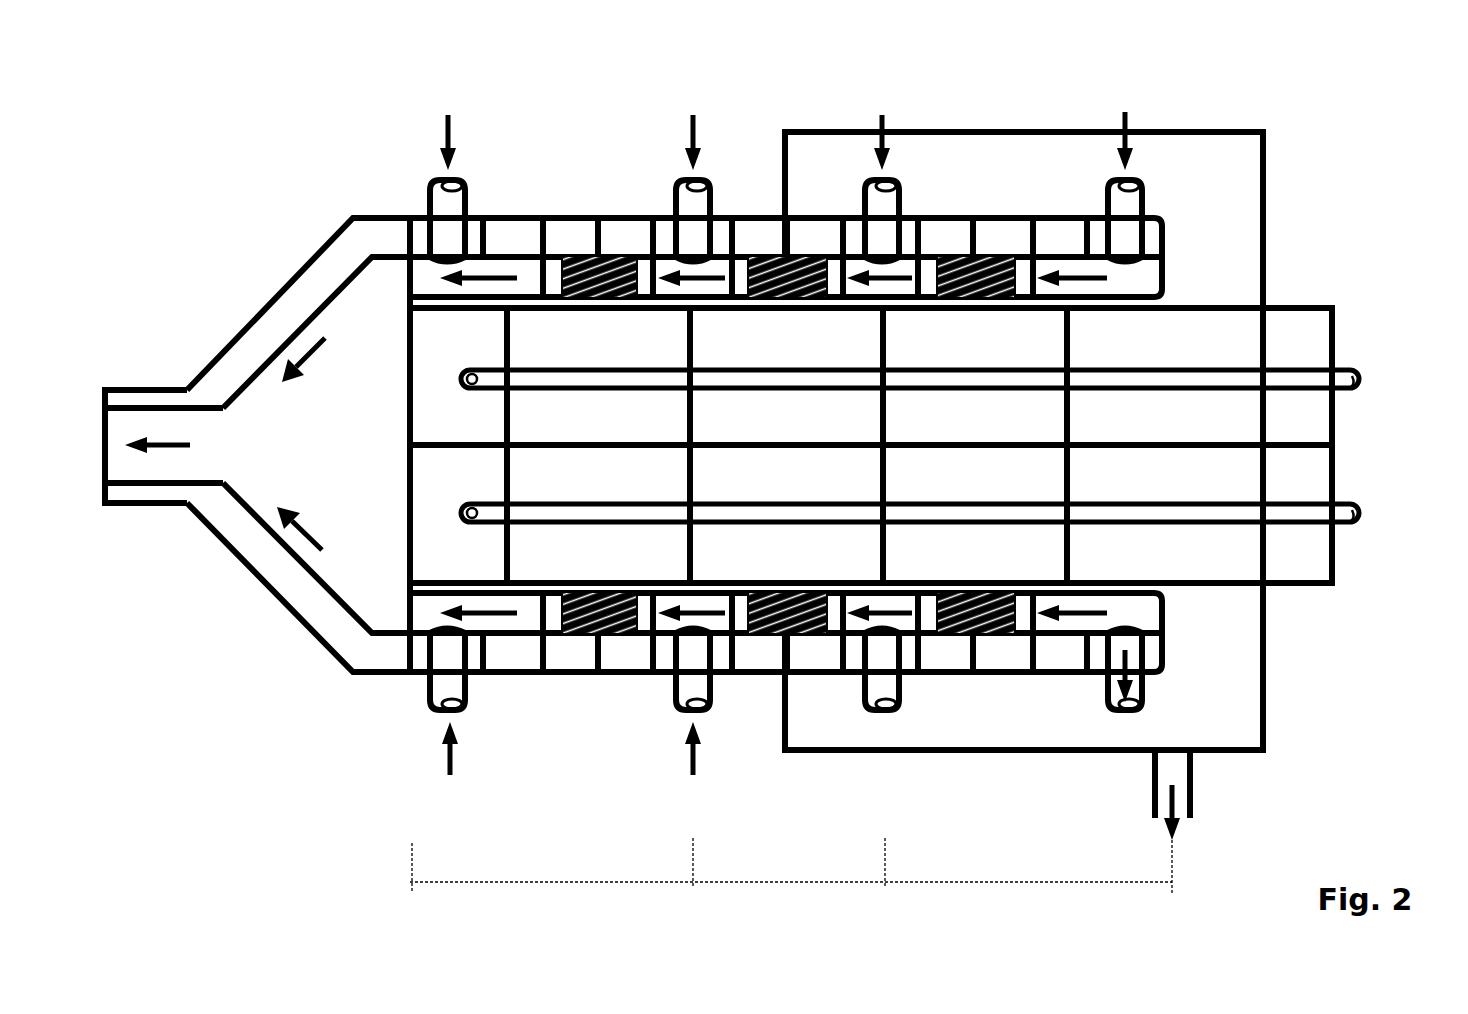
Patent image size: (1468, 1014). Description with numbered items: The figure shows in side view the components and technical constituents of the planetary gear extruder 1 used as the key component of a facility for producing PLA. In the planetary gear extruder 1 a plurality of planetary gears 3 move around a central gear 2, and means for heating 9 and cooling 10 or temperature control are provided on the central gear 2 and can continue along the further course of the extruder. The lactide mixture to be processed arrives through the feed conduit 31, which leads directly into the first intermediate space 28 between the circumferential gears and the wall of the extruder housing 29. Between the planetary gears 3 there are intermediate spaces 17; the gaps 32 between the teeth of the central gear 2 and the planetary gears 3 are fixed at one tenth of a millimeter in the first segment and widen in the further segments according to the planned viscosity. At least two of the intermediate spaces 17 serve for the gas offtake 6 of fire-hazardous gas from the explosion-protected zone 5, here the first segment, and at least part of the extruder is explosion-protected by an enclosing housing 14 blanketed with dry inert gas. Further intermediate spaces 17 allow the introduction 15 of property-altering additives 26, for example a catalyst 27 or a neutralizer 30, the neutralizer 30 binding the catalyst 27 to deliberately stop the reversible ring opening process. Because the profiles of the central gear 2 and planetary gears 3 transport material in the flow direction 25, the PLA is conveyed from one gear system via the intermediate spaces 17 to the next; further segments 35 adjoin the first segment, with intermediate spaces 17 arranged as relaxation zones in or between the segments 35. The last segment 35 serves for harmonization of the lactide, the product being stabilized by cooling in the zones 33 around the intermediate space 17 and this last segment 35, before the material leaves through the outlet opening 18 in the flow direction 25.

The planetary gear extruder 1 is at (293, 617).
The central gear 2 is at (330, 240).
The planetary gears 3 is at (765, 257).
The explosion-protected zone 5 is at (1210, 232).
The gas offtake 6 is at (1149, 735).
The heating of the central gear 9 is at (1307, 379).
The cooling of the central gear 10 is at (1307, 514).
The enclosing housing 14 is at (1241, 132).
The introduction of additives 15 is at (476, 235).
The intermediate space 17 is at (385, 237).
The outlet opening 18 is at (143, 505).
The flow direction of material 25 is at (445, 275).
The additives 26 is at (572, 445).
The catalyst 27 is at (784, 120).
The first intermediate space between gears and housing wall 28 is at (1143, 282).
The extruder housing 29 is at (517, 675).
The neutralizer 30 is at (449, 766).
The feed conduit for lactide mixture 31 is at (1129, 120).
The gap 32 is at (928, 270).
The zones in longitudinal direction 33 is at (627, 237).
The segment 35 is at (791, 866).